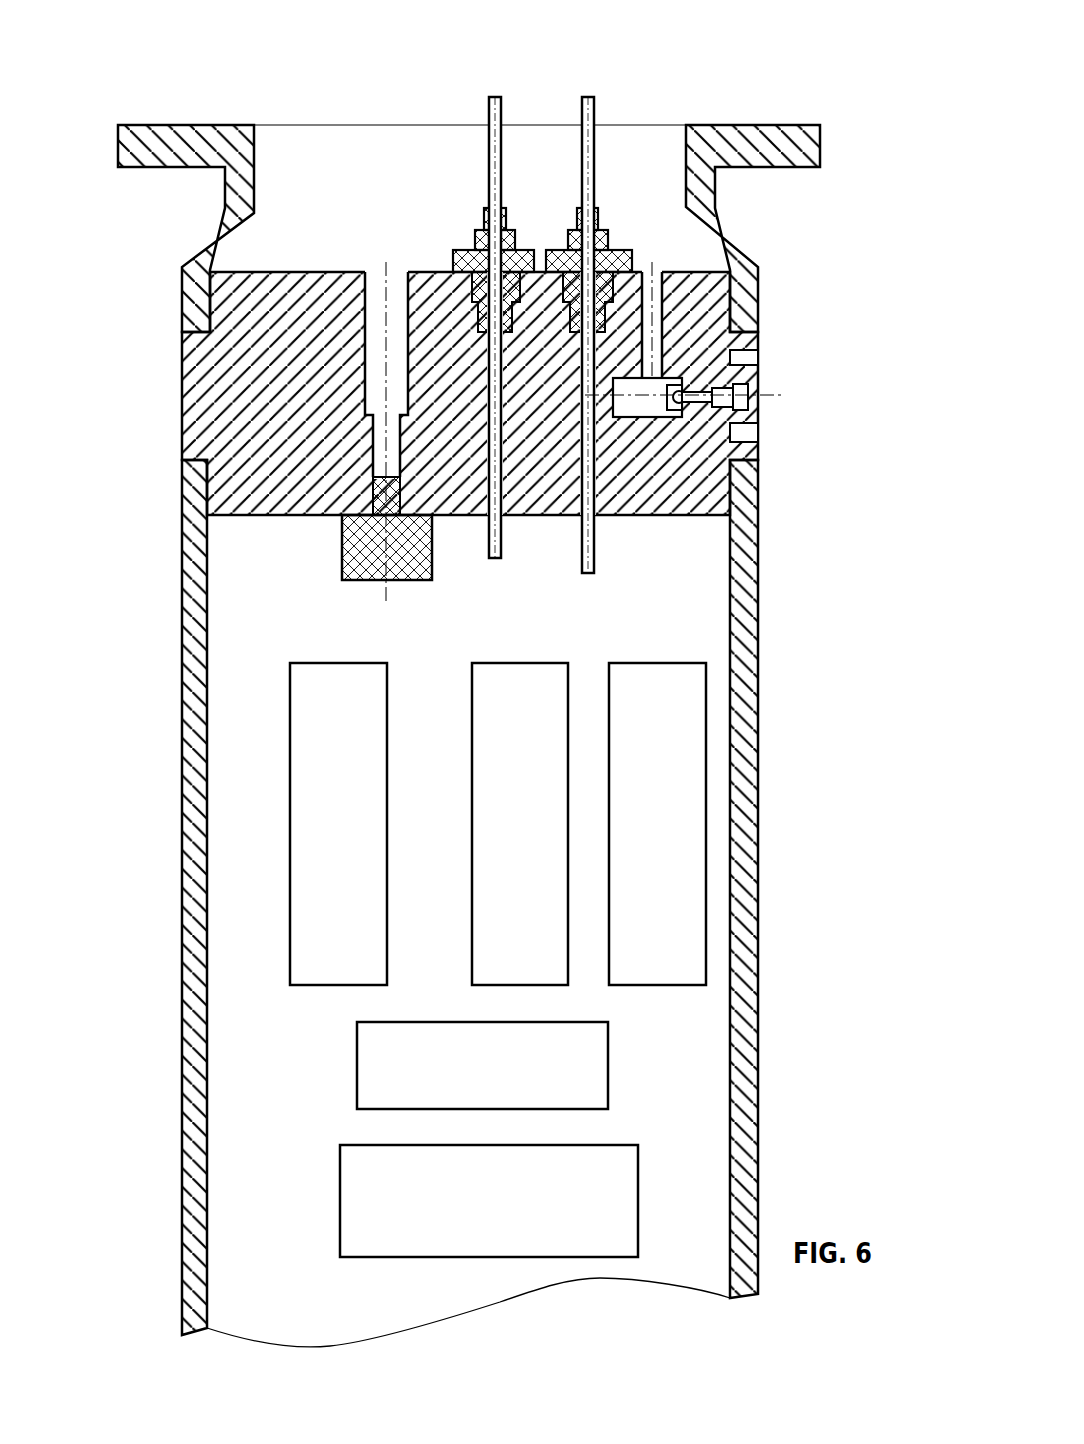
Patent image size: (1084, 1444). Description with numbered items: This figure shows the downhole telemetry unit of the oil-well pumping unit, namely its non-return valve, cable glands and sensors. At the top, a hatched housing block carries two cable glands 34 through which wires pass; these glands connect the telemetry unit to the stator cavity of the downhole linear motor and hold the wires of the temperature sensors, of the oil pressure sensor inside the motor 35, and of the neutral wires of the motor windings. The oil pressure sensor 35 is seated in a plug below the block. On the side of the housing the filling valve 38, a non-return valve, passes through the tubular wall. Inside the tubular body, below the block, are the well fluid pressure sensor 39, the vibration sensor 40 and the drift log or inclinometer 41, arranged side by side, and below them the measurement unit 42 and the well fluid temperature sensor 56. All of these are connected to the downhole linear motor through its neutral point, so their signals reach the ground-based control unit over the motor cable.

The cable glands 34 is at (465, 258).
The oil pressure sensor inside the motor 35 is at (397, 560).
The filling valve 38 is at (745, 377).
The well fluid pressure sensor 39 is at (340, 710).
The vibration sensor 40 is at (520, 710).
The drift log or inclinometer 41 is at (662, 710).
The measurement unit 42 is at (402, 1066).
The well fluid temperature sensor 56 is at (615, 1202).